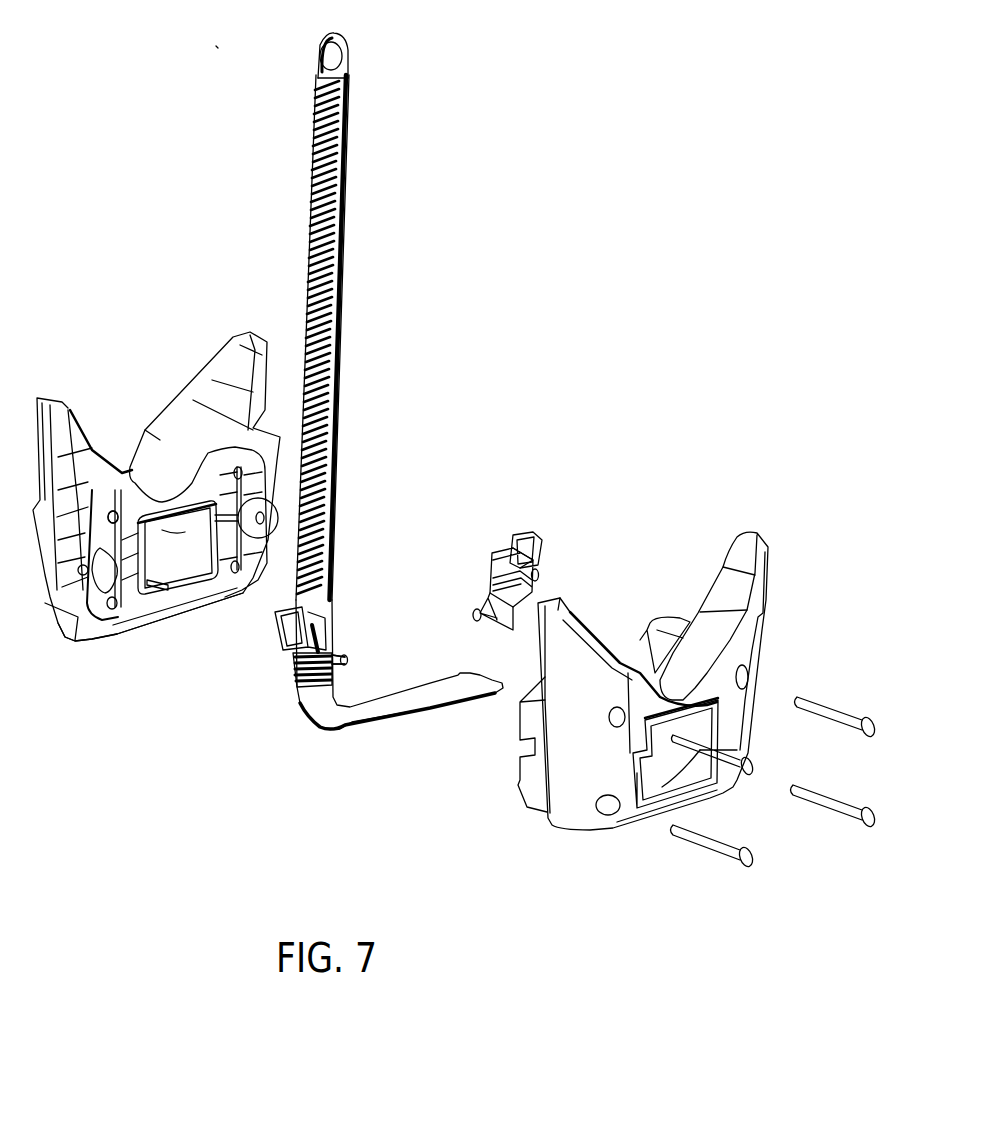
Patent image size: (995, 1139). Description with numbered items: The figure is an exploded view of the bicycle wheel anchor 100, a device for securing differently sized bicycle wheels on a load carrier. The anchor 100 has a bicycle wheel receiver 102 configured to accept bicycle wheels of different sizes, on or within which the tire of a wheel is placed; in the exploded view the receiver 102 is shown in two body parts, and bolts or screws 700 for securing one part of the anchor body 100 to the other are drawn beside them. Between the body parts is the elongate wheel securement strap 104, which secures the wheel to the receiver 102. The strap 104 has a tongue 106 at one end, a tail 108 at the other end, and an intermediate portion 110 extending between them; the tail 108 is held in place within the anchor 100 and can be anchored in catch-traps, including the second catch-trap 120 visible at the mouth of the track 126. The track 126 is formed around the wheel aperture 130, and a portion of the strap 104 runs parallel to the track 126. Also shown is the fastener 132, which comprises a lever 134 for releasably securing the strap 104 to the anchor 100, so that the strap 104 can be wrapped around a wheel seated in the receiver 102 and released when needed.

The bicycle wheel anchor 100 is at (216, 45).
The bicycle wheel receiver 102 is at (187, 375).
The wheel securement strap 104 is at (366, 166).
The tongue portion 106 is at (349, 65).
The tail portion 108 is at (433, 683).
The intermediate extension portion 110 is at (342, 437).
The second catch-trap 120 is at (108, 633).
The track 126 is at (201, 609).
The wheel aperture 130 is at (127, 470).
The fastener 132 is at (344, 677).
The lever 134 is at (282, 632).
The bolts or screws 700 is at (857, 720).